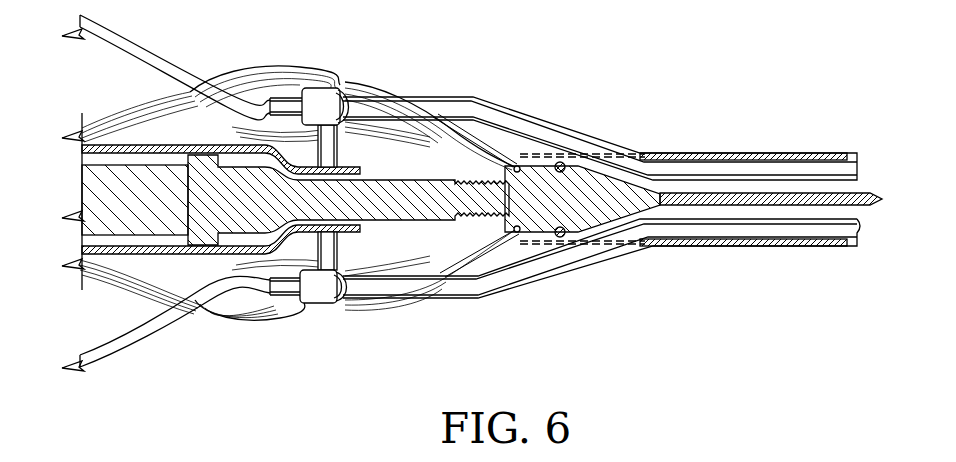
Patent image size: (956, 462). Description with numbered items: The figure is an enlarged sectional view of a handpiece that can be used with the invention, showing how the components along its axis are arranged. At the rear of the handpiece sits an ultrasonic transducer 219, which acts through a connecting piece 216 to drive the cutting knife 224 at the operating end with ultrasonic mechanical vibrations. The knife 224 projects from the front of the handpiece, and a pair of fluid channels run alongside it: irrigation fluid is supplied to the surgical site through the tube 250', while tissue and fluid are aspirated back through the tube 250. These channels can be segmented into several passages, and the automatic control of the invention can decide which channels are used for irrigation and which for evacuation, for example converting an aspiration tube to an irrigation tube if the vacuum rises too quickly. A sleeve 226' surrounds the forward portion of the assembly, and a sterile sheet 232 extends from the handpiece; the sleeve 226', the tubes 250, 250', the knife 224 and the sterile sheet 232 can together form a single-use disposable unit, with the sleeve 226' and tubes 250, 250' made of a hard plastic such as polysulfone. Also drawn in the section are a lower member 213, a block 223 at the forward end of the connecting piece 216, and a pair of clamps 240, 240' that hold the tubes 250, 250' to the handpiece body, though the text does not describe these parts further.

The lower housing sheath 213 is at (368, 227).
The connecting piece 216 is at (412, 180).
The ultrasonic transducer 219 is at (84, 196).
The ferrule block 223 is at (563, 237).
The cutting knife 224 is at (880, 202).
The sleeve 226' is at (683, 169).
The sterile sheet 232 is at (210, 320).
The lower clamp 240 is at (308, 305).
The upper clamp 240' is at (317, 97).
The aspiration tube 250 is at (601, 296).
The irrigation tube 250' is at (600, 105).